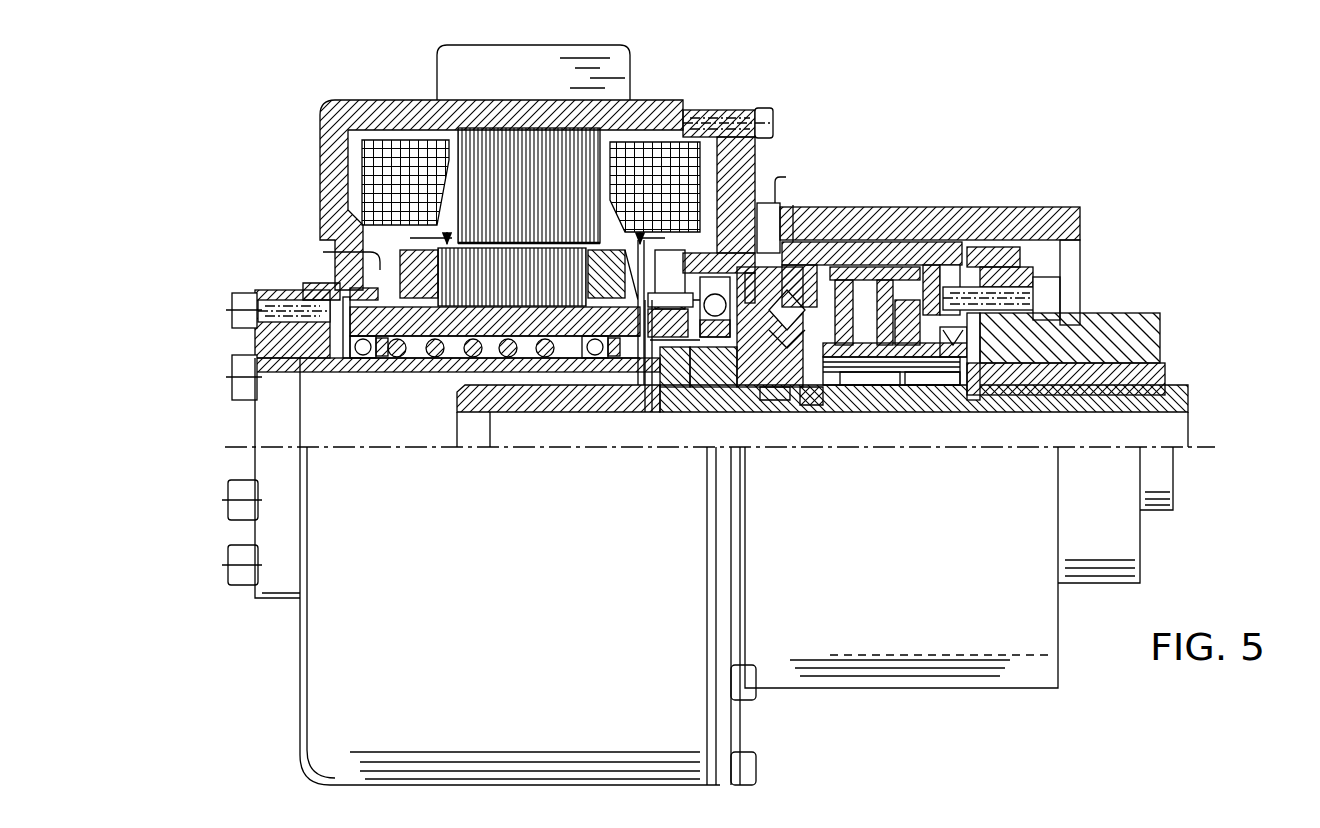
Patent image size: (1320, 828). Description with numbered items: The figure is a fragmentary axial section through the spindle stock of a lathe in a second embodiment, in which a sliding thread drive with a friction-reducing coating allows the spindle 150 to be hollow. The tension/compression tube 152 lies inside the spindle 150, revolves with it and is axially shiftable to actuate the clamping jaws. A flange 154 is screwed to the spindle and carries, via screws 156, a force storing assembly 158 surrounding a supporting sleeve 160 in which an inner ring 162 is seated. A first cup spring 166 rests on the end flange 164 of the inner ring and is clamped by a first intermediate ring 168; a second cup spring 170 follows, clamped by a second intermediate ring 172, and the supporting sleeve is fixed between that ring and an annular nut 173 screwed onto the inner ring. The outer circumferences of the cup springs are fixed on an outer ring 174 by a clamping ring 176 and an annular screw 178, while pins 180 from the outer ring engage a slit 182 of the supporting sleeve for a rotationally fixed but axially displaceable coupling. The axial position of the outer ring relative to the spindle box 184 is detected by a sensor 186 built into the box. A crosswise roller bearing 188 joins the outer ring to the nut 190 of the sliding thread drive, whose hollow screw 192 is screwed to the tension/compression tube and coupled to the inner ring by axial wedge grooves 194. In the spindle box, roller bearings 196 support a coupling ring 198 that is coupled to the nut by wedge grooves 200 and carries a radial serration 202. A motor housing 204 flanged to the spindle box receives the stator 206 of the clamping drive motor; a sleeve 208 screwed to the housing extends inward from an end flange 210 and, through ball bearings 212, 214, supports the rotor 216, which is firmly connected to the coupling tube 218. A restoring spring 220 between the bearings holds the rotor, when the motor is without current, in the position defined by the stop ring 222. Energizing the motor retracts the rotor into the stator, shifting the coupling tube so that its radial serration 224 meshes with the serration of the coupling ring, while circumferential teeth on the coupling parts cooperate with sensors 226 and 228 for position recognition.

The spindle 150 is at (1157, 374).
The tension/compression tube 152 is at (1185, 412).
The flange 154 is at (1132, 330).
The screws 156 is at (1037, 290).
The force storing assembly 158 is at (917, 228).
The supporting sleeve 160 is at (958, 247).
The inner ring 162 is at (950, 357).
The end flange 164 is at (805, 410).
The first cup spring 166 is at (847, 378).
The first intermediate ring 168 is at (872, 378).
The second cup spring 170 is at (893, 280).
The second intermediate ring 172 is at (930, 412).
The annular nut 173 is at (985, 395).
The outer ring 174 is at (793, 205).
The clamping ring 176 is at (855, 280).
The annular screw 178 is at (935, 248).
The pins 180 is at (827, 266).
The slit 182 is at (832, 262).
The spindle box 184 is at (731, 137).
The sensor 186 is at (774, 203).
The crosswise roller bearing 188 is at (771, 327).
The nut 190 is at (807, 412).
The hollow screw 192 is at (783, 400).
The axial wedge grooves 194 is at (867, 412).
The roller bearings 196 is at (713, 380).
The coupling ring 198 is at (731, 387).
The wedge grooves 200 is at (677, 387).
The radial serration 202 is at (648, 412).
The motor housing 204 is at (386, 108).
The stator 206 is at (518, 162).
The sleeve 208 is at (318, 372).
The end flange 210 is at (270, 340).
The ball bearing 212 is at (352, 358).
The ball bearing 214 is at (593, 375).
The rotor 216 is at (510, 286).
The coupling tube 218 is at (417, 323).
The restoring spring 220 is at (483, 385).
The stop ring 222 is at (600, 333).
The radial serration 224 is at (608, 297).
The sensor 226 is at (672, 262).
The sensor 228 is at (376, 289).